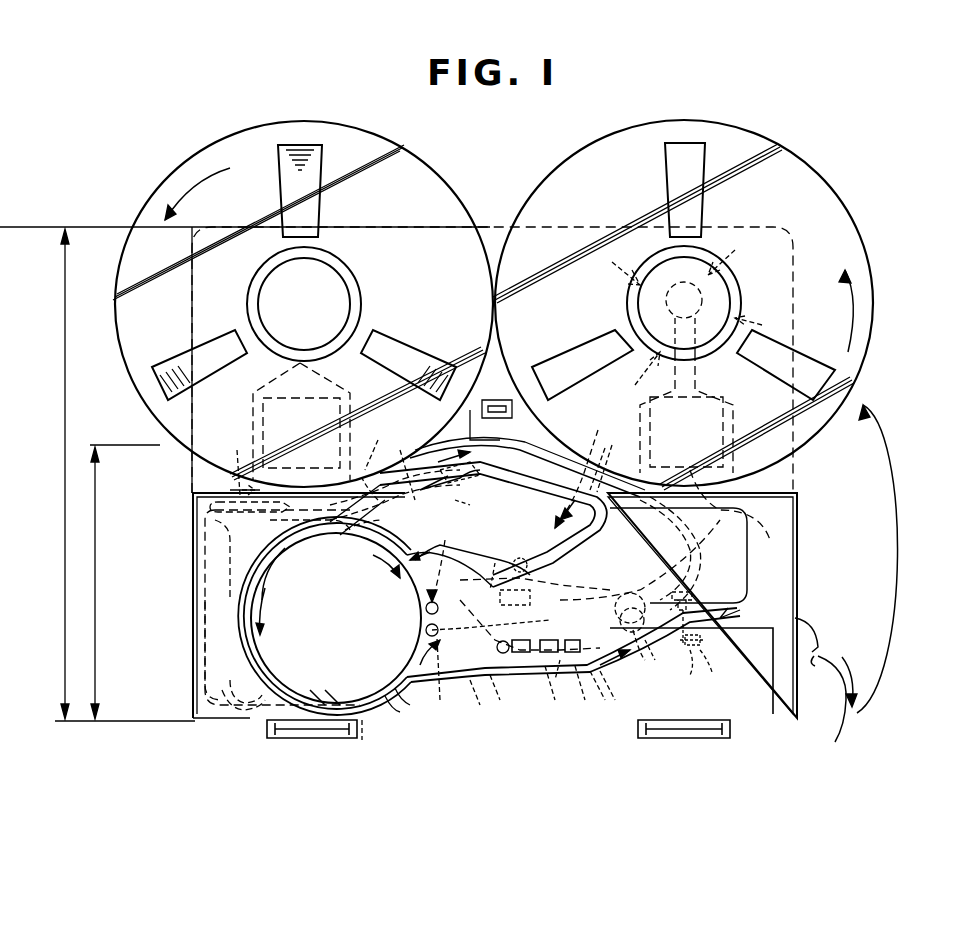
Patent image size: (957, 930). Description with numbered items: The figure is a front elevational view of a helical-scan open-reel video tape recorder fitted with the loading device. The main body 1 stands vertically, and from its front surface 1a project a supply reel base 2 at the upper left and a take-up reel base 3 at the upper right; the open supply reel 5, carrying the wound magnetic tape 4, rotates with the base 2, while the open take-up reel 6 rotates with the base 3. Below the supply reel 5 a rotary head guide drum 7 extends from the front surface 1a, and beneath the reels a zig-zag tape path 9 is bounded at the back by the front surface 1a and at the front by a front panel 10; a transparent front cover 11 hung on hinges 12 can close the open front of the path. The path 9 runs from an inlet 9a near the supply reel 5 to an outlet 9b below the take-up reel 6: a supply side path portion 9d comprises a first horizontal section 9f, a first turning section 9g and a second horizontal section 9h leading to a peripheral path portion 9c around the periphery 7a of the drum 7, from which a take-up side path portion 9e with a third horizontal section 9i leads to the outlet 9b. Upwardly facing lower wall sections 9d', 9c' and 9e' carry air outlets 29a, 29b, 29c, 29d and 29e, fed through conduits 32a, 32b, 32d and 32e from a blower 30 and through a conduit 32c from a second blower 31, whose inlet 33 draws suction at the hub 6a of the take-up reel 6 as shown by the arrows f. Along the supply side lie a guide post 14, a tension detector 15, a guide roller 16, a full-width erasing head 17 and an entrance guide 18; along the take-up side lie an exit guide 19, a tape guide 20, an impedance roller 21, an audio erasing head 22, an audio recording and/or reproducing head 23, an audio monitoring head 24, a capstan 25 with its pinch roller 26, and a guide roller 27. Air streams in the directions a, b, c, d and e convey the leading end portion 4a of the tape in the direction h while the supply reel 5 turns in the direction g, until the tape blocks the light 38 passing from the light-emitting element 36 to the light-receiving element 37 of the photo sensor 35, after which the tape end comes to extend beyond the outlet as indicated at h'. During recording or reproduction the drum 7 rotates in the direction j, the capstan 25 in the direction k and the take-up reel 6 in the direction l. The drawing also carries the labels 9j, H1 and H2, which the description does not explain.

The main body 1 is at (178, 562).
The front surface 1a is at (190, 480).
The supply reel base 2 is at (338, 285).
The take-up reel base 3 is at (640, 300).
The magnetic tape 4 is at (265, 565).
The leading end portion 4a is at (835, 738).
The supply reel 5 is at (185, 172).
The take-up reel 6 is at (855, 260).
The hub 6a is at (725, 270).
The rotary head guide drum 7 is at (315, 690).
The periphery 7a is at (260, 577).
The tape path 9 is at (520, 458).
The inlet 9a is at (485, 420).
The outlet 9b is at (740, 612).
The peripheral path portion 9c is at (316, 616).
The lower wall section 9c' is at (394, 736).
The supply side path portion 9d is at (612, 465).
The lower wall sections 9d' is at (450, 496).
The take-up side path portion 9e is at (612, 719).
The lower wall section 9e' is at (556, 716).
The first substantially horizontal path section 9f is at (505, 460).
The first turning path section 9g is at (640, 500).
The second substantially horizontal path section 9h is at (462, 575).
The third substantially horizontal path section 9i is at (585, 700).
The guide wall portion 9j is at (412, 712).
The front panel 10 is at (200, 634).
The front cover 11 is at (200, 722).
The hinges 12 is at (315, 738).
The guide post 14 is at (488, 472).
The tension detector 15 is at (593, 467).
The guide roller 16 is at (532, 580).
The full-width erasing head 17 is at (500, 610).
The entrance guide 18 is at (392, 605).
The exit guide 19 is at (426, 632).
The tape guide 20 is at (485, 628).
The impedance roller 21 is at (503, 641).
The audio erasing head 22 is at (530, 644).
The audio recording and/or reproducing head 23 is at (565, 644).
The audio monitoring head 24 is at (618, 612).
The capstan 25 is at (648, 660).
The pinch roller 26 is at (645, 612).
The guide roller 27 is at (725, 595).
The air outlet 29a is at (238, 495).
The air outlet 29b is at (412, 490).
The air outlet 29c is at (545, 578).
The air outlet 29d is at (298, 700).
The air outlet 29e is at (510, 688).
The blower 30 is at (278, 400).
The blower 31 is at (735, 425).
The air conducting conduit 32a is at (210, 520).
The air conducting conduit 32b is at (378, 500).
The conduit 32c is at (675, 552).
The air conducting conduit 32d is at (225, 682).
The air conducting conduit 32e is at (480, 705).
The inlet 33 is at (710, 300).
The photo sensor 35 is at (705, 642).
The light-emitting element 36 is at (695, 620).
The light-receiving element 37 is at (698, 673).
The light 38 is at (718, 668).
The arrow a is at (242, 464).
The arrow b is at (450, 495).
The arrow c is at (495, 560).
The arrow d is at (364, 743).
The arrow e is at (565, 680).
The arrows f is at (687, 313).
The arrow g is at (185, 188).
The arrow h is at (444, 577).
The arrow h' is at (857, 670).
The arrow j is at (380, 570).
The arrow k is at (655, 655).
The arrow l is at (845, 320).
The height dimension H1 is at (121, 582).
The height dimension H2 is at (245, 474).